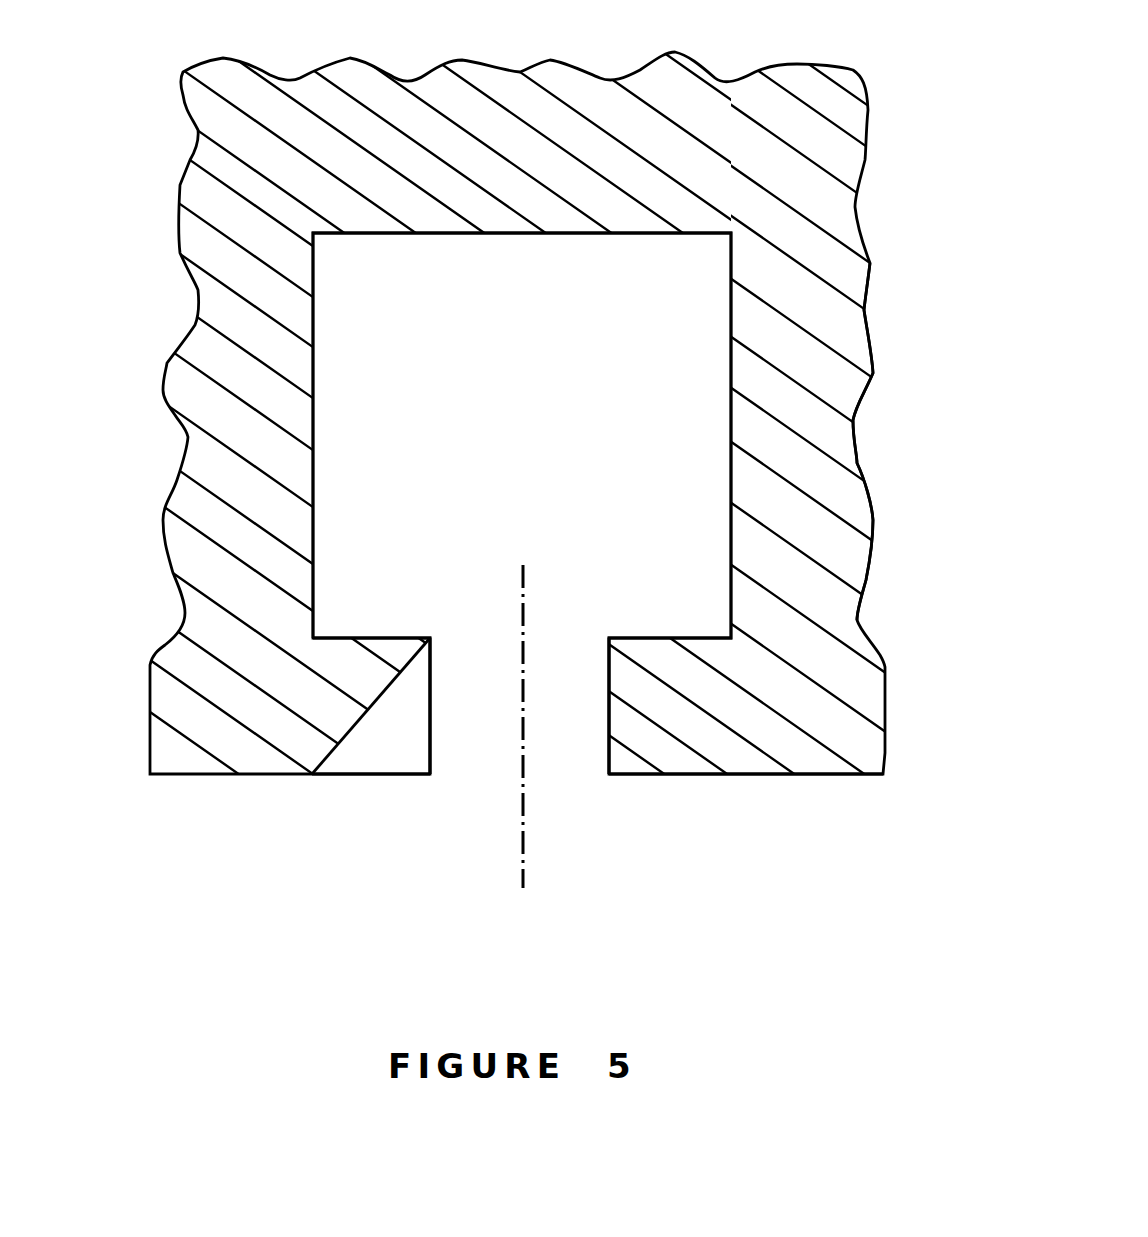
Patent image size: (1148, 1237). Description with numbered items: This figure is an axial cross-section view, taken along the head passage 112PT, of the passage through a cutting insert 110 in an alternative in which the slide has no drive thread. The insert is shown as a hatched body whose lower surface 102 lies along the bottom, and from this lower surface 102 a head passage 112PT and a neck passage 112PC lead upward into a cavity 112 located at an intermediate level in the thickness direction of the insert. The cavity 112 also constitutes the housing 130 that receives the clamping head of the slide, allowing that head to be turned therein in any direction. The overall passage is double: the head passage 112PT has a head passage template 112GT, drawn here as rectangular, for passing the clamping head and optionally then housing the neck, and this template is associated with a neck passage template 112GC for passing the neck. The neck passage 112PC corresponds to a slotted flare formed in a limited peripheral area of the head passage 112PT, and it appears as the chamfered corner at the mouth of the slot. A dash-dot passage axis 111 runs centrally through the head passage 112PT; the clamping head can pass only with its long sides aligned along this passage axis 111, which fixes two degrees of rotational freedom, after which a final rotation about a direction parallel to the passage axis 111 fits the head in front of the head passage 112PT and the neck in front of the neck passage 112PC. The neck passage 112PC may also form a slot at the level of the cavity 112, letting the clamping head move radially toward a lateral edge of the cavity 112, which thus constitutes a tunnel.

The cutting insert 110 is at (275, 52).
The cavity 112 is at (637, 562).
The neck passage 112PC is at (353, 743).
The neck passage template 112GC is at (375, 793).
The head passage 112PT is at (472, 732).
The head passage template 112GT is at (573, 733).
The passage axis 111 is at (523, 837).
The housing 130 is at (873, 563).
The lower surface 102 is at (768, 778).